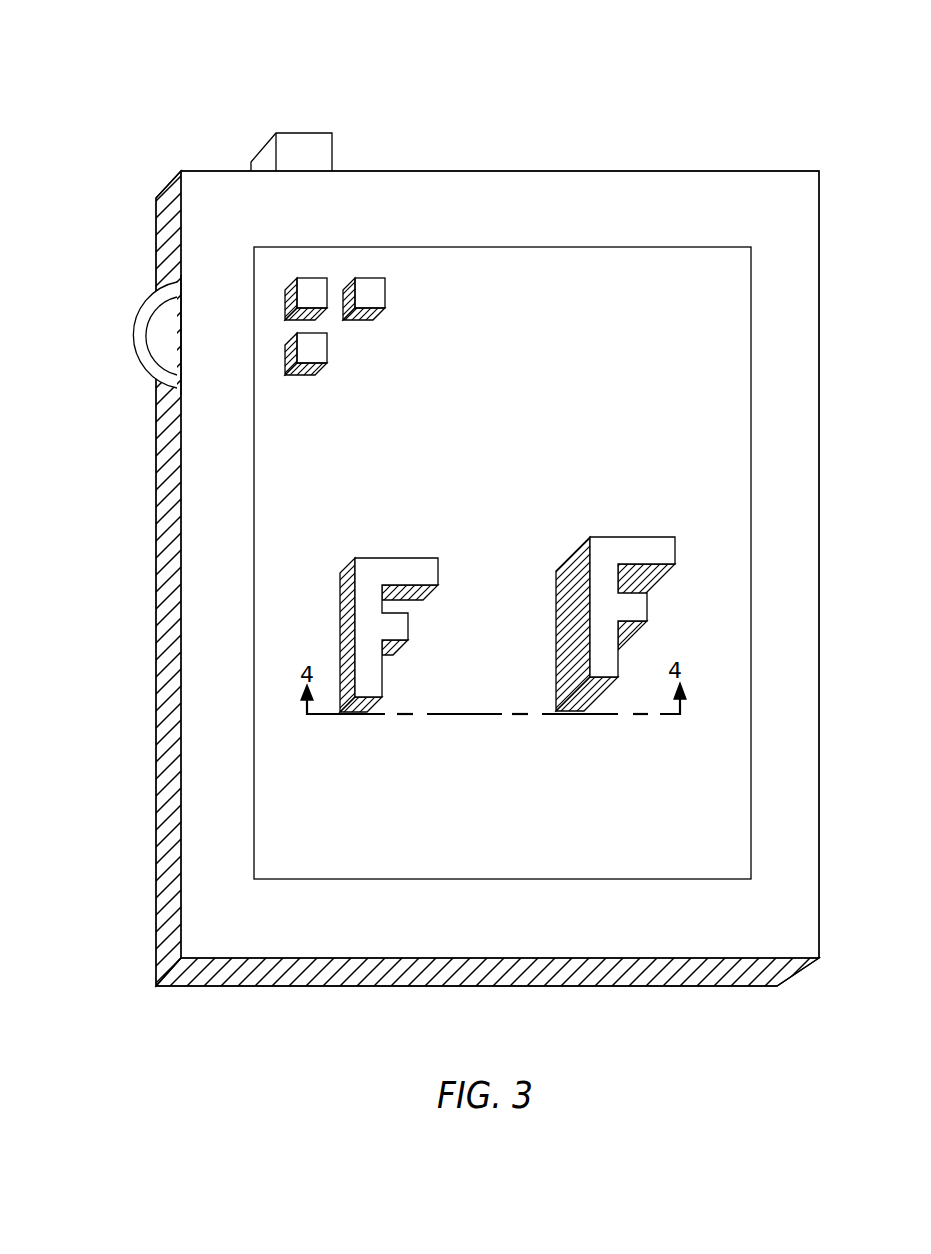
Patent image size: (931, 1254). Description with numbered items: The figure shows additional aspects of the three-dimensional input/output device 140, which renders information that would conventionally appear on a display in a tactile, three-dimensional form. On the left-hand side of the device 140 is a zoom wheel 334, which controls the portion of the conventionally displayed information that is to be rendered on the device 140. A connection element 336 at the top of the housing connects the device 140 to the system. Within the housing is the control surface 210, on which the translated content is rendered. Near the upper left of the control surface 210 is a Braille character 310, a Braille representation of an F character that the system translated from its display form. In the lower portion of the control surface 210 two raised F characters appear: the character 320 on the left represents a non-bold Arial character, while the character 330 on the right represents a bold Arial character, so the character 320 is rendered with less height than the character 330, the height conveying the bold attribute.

The three-dimensional input/output device 140 is at (740, 73).
The control surface 210 is at (717, 327).
The Braille character 310 is at (283, 262).
The character 320 is at (399, 601).
The character 330 is at (627, 591).
The zoom wheel 334 is at (96, 335).
The connection element 336 is at (379, 143).